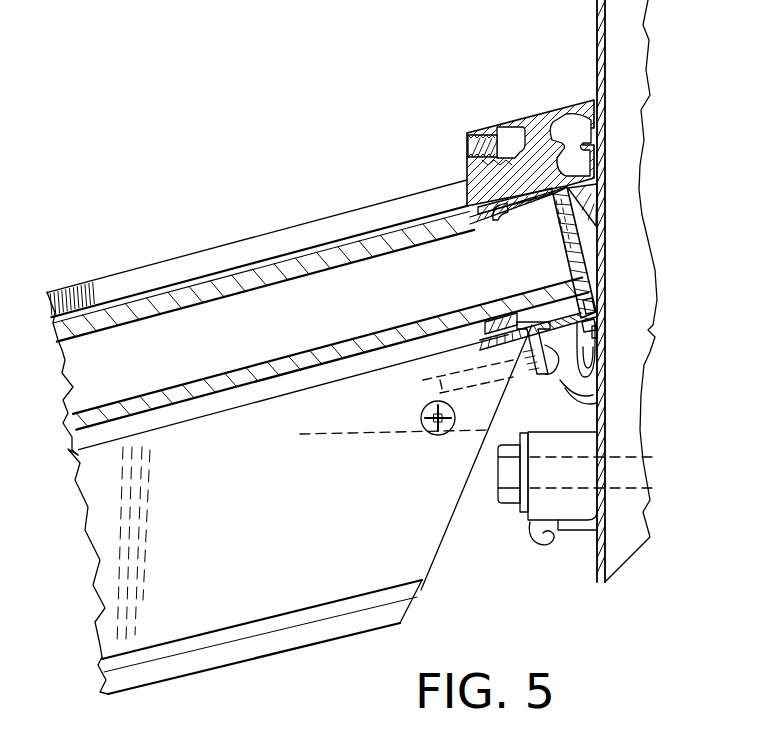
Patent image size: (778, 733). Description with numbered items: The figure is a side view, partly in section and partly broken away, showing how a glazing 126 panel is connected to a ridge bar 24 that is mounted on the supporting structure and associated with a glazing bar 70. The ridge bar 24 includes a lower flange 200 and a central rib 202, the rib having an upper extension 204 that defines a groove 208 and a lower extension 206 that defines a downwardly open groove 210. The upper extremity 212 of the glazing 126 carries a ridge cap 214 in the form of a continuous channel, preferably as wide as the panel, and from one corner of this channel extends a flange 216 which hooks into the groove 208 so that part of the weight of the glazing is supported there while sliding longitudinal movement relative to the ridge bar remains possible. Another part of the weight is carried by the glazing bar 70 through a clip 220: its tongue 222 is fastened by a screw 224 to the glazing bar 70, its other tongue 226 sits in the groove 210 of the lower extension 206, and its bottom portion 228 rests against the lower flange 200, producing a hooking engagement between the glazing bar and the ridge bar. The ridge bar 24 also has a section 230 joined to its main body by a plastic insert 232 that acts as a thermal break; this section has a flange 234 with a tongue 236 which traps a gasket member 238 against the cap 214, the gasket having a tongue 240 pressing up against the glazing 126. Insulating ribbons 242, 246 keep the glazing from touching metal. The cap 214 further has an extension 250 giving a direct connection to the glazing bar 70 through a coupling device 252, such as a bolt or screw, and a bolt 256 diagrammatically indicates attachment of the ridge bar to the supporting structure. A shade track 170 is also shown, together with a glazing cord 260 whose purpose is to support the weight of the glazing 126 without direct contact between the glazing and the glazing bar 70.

The ridge bar 24 is at (594, 432).
The glazing bar 70 is at (417, 547).
The glazing 126 is at (258, 318).
The shade track 170 is at (327, 610).
The lower flange 200 is at (580, 531).
The central rib 202 is at (600, 352).
The upper extension 204 is at (586, 306).
The lower extension 206 is at (597, 413).
The groove 208 is at (598, 328).
The downwardly open groove 210 is at (588, 363).
The upper extremity 212 is at (525, 268).
The ridge cap 214 is at (568, 188).
The flange 216 is at (594, 322).
The clip 220 is at (535, 447).
The tongue 222 is at (474, 414).
The screw 224 is at (446, 435).
The tongue 226 is at (593, 392).
The bottom portion 228 is at (530, 521).
The section 230 is at (576, 0).
The plastic insert 232 is at (575, 118).
The flange 234 is at (466, 132).
The tongue 236 is at (466, 148).
The gasket member 238 is at (481, 176).
The tongue 240 is at (470, 210).
The insulating ribbon 242 is at (504, 212).
The insulating ribbon 246 is at (497, 320).
The extension 250 is at (540, 378).
The coupling device 252 is at (428, 392).
The bolt 256 is at (498, 485).
The glazing cord 260 is at (183, 419).